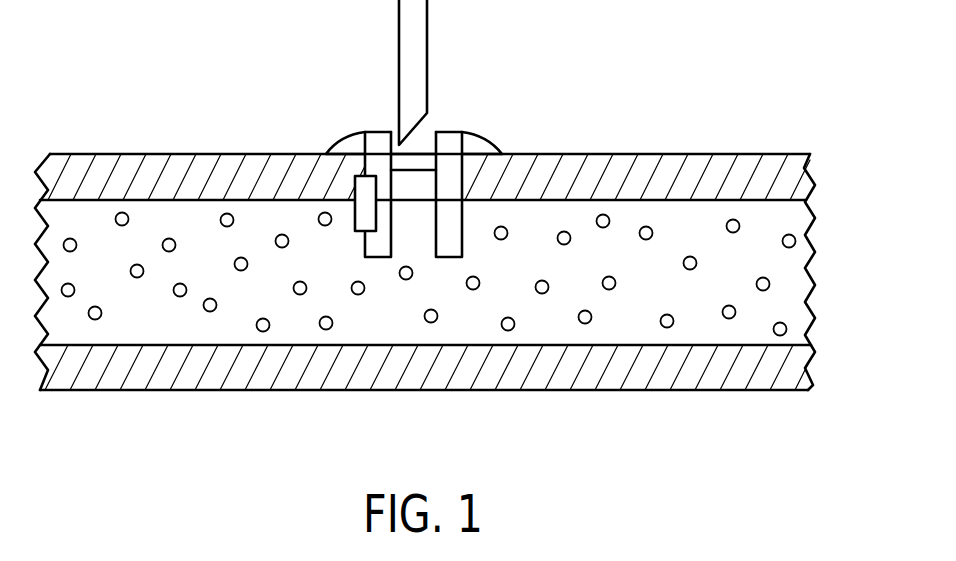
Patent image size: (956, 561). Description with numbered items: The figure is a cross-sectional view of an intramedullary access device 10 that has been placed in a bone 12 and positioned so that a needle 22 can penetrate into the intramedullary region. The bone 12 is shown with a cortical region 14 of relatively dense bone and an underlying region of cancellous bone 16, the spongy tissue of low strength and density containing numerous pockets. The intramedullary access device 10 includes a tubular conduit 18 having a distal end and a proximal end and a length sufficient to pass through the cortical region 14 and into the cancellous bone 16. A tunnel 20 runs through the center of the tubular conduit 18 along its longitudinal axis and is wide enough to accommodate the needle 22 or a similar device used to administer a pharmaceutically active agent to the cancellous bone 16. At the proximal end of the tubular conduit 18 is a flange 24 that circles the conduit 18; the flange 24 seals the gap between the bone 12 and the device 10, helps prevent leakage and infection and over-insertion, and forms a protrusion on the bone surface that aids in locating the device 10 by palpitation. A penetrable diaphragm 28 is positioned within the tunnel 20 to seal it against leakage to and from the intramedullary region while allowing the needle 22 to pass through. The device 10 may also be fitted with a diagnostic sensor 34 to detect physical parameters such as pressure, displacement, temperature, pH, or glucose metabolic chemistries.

The intramedullary access device 10 is at (437, 156).
The bone 12 is at (425, 218).
The cortical region 14 is at (632, 167).
The cancellous bone 16 is at (628, 327).
The tubular conduit 18 is at (453, 235).
The tunnel 20 is at (417, 144).
The needle 22 is at (427, 33).
The flange 24 is at (381, 133).
The penetrable diaphragm 28 is at (398, 162).
The diagnostic sensor 34 is at (358, 221).